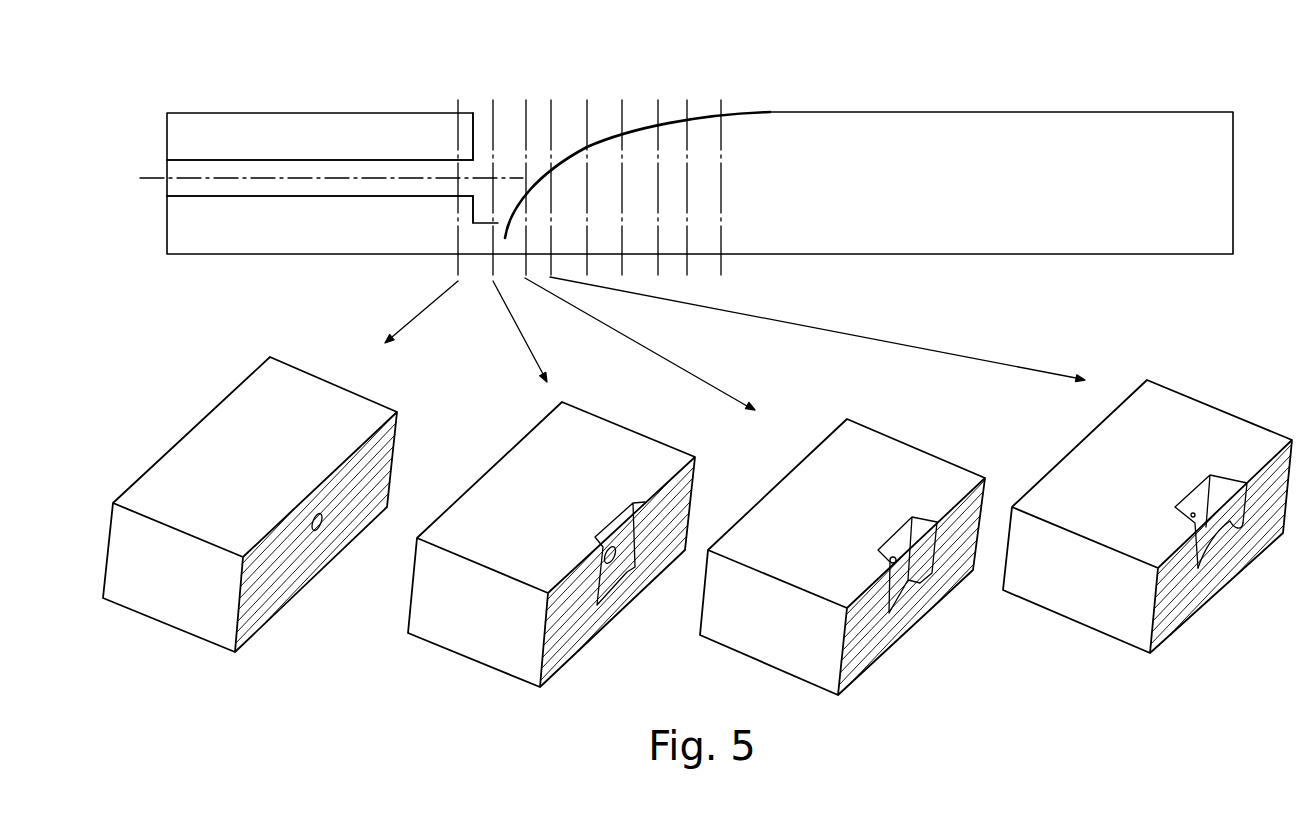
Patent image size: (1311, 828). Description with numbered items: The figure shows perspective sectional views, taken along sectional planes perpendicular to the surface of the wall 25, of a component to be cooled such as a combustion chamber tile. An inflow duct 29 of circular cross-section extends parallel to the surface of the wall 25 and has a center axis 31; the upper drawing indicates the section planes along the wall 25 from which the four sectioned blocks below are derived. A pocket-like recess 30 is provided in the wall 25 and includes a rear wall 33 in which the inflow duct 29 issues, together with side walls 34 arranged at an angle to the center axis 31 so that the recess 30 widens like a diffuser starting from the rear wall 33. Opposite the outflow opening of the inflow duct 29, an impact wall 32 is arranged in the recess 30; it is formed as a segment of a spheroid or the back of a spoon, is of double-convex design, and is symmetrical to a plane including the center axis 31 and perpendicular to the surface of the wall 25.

The wall 25 is at (330, 111).
The inflow duct 29 is at (210, 162).
The recess 30 is at (570, 128).
The center axis 31 is at (273, 182).
The impact wall 32 is at (635, 128).
The rear wall 33 is at (473, 137).
The side walls 34 is at (638, 513).